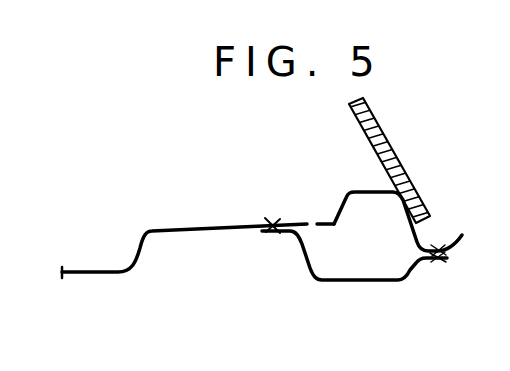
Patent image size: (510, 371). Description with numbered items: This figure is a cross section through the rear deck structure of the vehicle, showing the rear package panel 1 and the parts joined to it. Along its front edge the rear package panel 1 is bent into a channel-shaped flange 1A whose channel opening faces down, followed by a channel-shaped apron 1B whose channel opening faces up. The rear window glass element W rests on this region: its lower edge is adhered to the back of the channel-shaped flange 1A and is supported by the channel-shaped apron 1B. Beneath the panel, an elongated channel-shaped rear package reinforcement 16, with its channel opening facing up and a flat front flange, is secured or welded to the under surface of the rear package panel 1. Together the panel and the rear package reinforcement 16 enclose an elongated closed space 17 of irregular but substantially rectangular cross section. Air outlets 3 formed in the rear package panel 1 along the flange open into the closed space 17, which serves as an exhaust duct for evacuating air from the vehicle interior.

The rear package panel 1 is at (193, 224).
The air outlets 3 is at (317, 223).
The channel-shaped flange 1A is at (354, 191).
The channel-shaped apron 1B is at (432, 247).
The rear window glass element W is at (383, 127).
The elongated closed space 17 is at (373, 250).
The rear package reinforcement 16 is at (366, 283).